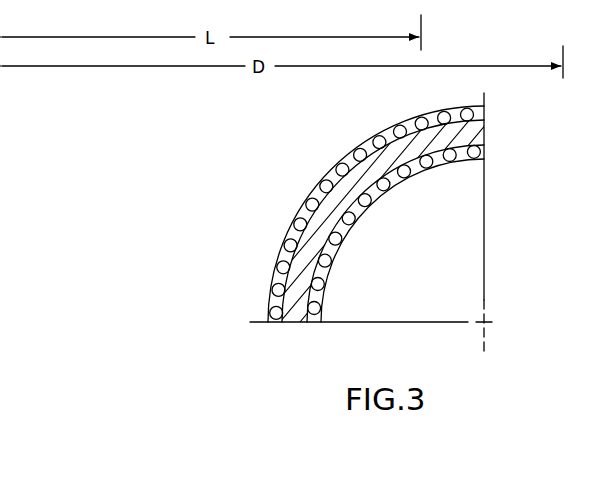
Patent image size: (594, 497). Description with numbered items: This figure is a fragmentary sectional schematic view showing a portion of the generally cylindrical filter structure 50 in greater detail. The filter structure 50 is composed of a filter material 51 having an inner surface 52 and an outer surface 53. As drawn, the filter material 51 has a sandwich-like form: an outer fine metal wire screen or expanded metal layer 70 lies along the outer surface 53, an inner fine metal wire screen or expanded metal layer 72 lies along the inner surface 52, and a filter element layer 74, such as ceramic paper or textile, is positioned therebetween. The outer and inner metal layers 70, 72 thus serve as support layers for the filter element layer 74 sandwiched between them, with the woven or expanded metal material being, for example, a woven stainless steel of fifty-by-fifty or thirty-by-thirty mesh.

The filter structure 50 is at (263, 232).
The filter material 51 is at (300, 323).
The inner surface 52 is at (330, 273).
The outer surface 53 is at (311, 191).
The outer fine metal wire screen or expanded metal layer 70 is at (399, 132).
The inner fine metal wire screen or expanded metal layer 72 is at (452, 160).
The filter element layer 74 is at (476, 139).